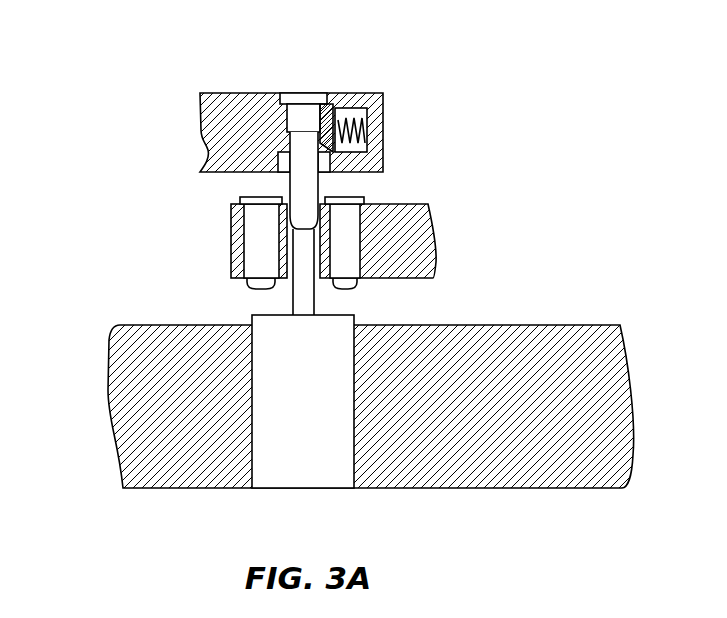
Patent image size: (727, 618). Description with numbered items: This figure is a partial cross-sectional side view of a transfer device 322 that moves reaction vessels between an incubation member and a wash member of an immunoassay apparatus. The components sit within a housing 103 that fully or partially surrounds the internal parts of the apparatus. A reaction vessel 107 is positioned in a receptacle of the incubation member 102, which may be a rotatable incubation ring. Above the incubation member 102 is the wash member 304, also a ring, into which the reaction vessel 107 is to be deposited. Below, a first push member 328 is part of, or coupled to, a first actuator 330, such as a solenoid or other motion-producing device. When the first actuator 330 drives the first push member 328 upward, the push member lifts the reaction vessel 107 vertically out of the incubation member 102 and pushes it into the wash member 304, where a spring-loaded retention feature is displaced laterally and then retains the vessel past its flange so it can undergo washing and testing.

The transfer device 322 is at (208, 52).
The wash member 304 is at (200, 113).
The reaction vessel 107 is at (302, 177).
The incubation member 102 is at (441, 237).
The first push member 328 is at (303, 311).
The first actuator 330 is at (284, 413).
The housing 103 is at (494, 419).